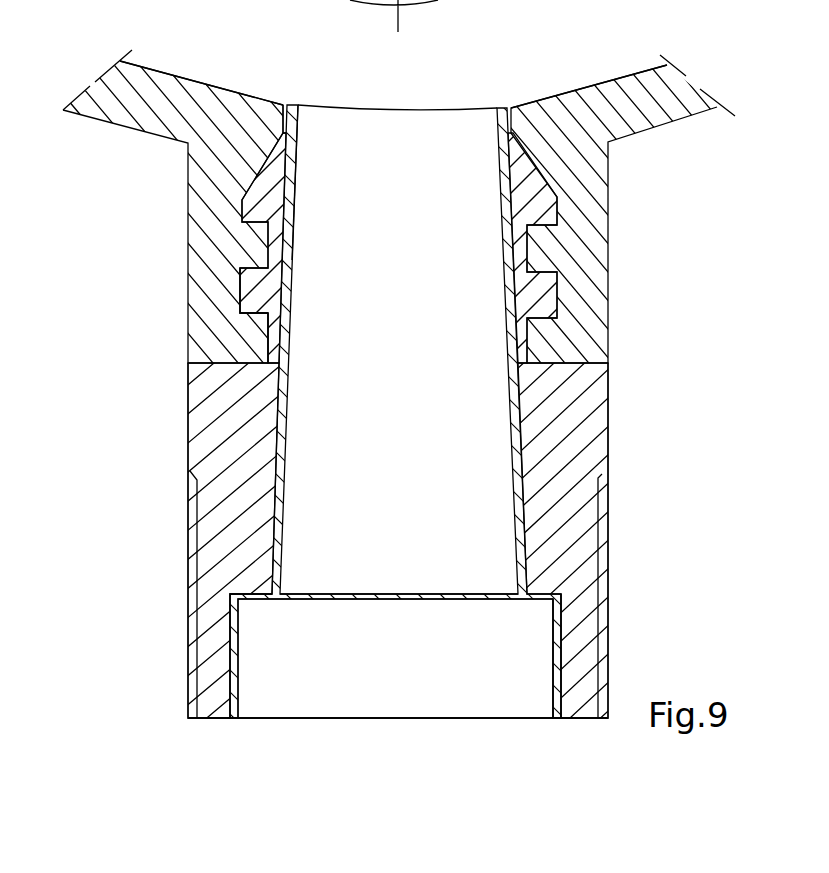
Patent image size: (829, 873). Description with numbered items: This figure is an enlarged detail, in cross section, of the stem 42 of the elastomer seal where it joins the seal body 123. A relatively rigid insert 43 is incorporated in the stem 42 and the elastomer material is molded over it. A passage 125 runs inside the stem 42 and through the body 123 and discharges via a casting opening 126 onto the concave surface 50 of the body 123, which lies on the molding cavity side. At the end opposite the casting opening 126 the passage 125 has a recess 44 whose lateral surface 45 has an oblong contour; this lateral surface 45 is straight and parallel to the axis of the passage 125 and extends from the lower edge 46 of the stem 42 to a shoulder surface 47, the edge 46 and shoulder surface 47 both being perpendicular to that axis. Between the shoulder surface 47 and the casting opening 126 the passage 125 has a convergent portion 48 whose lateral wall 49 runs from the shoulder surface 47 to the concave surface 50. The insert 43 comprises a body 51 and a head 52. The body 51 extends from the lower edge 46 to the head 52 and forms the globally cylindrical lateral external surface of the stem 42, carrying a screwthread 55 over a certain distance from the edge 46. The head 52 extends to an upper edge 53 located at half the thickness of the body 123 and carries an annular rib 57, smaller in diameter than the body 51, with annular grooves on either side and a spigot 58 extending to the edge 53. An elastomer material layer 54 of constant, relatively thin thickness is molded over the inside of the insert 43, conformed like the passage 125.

The stem 42 is at (148, 408).
The insert 43 is at (583, 398).
The recess 44 is at (475, 639).
The lateral surface 45 is at (552, 686).
The lower edge 46 is at (208, 720).
The shoulder surface 47 is at (252, 600).
The convergent portion 48 is at (360, 256).
The lateral wall 49 is at (292, 438).
The concave surface 50 is at (193, 75).
The body 51 is at (558, 522).
The head 52 is at (545, 205).
The upper edge 53 is at (285, 128).
The elastomer material layer 54 is at (286, 350).
The screwthread 55 is at (190, 625).
The annular rib 57 is at (257, 290).
The spigot 58 is at (257, 205).
The body 123 is at (122, 102).
The passage 125 is at (466, 362).
The casting opening 126 is at (448, 115).